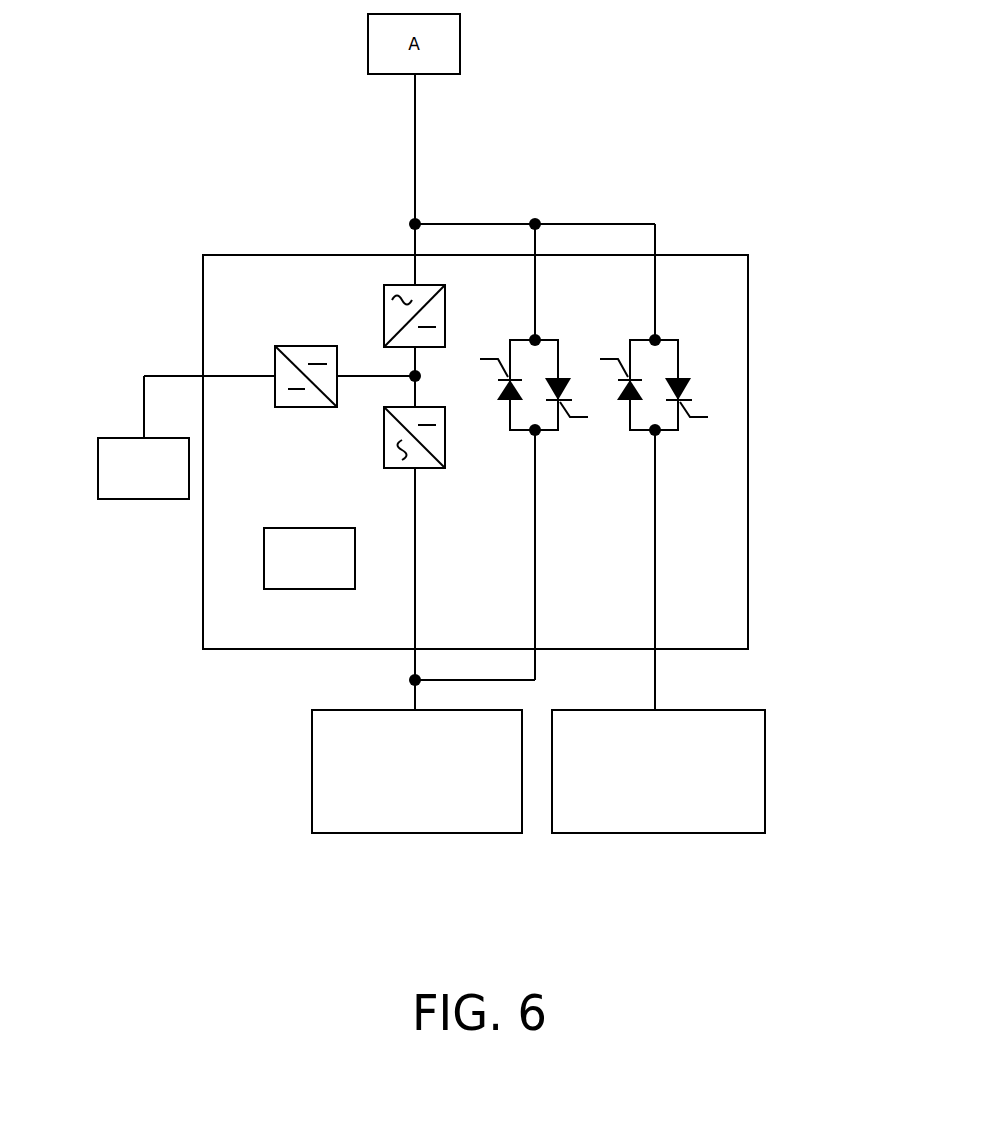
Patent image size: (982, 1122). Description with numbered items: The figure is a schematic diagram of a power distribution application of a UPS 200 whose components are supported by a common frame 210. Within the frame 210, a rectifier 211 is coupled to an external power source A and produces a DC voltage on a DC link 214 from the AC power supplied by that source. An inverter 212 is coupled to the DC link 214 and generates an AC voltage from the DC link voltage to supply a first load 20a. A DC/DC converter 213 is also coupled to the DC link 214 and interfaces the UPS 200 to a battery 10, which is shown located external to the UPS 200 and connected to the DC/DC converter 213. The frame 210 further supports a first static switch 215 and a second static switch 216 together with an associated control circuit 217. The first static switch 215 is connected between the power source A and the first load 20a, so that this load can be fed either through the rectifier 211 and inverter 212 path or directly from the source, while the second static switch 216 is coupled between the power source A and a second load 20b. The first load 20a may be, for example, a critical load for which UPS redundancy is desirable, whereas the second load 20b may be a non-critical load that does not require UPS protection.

The battery 10 is at (98, 468).
The UPS 200 is at (765, 238).
The frame 210 is at (748, 450).
The rectifier 211 is at (384, 317).
The inverter 212 is at (384, 437).
The DC/DC converter 213 is at (307, 407).
The DC link 214 is at (417, 360).
The first static switch 215 is at (519, 479).
The second static switch 216 is at (638, 465).
The control circuit 217 is at (310, 589).
The first load 20a is at (415, 833).
The second load 20b is at (658, 833).